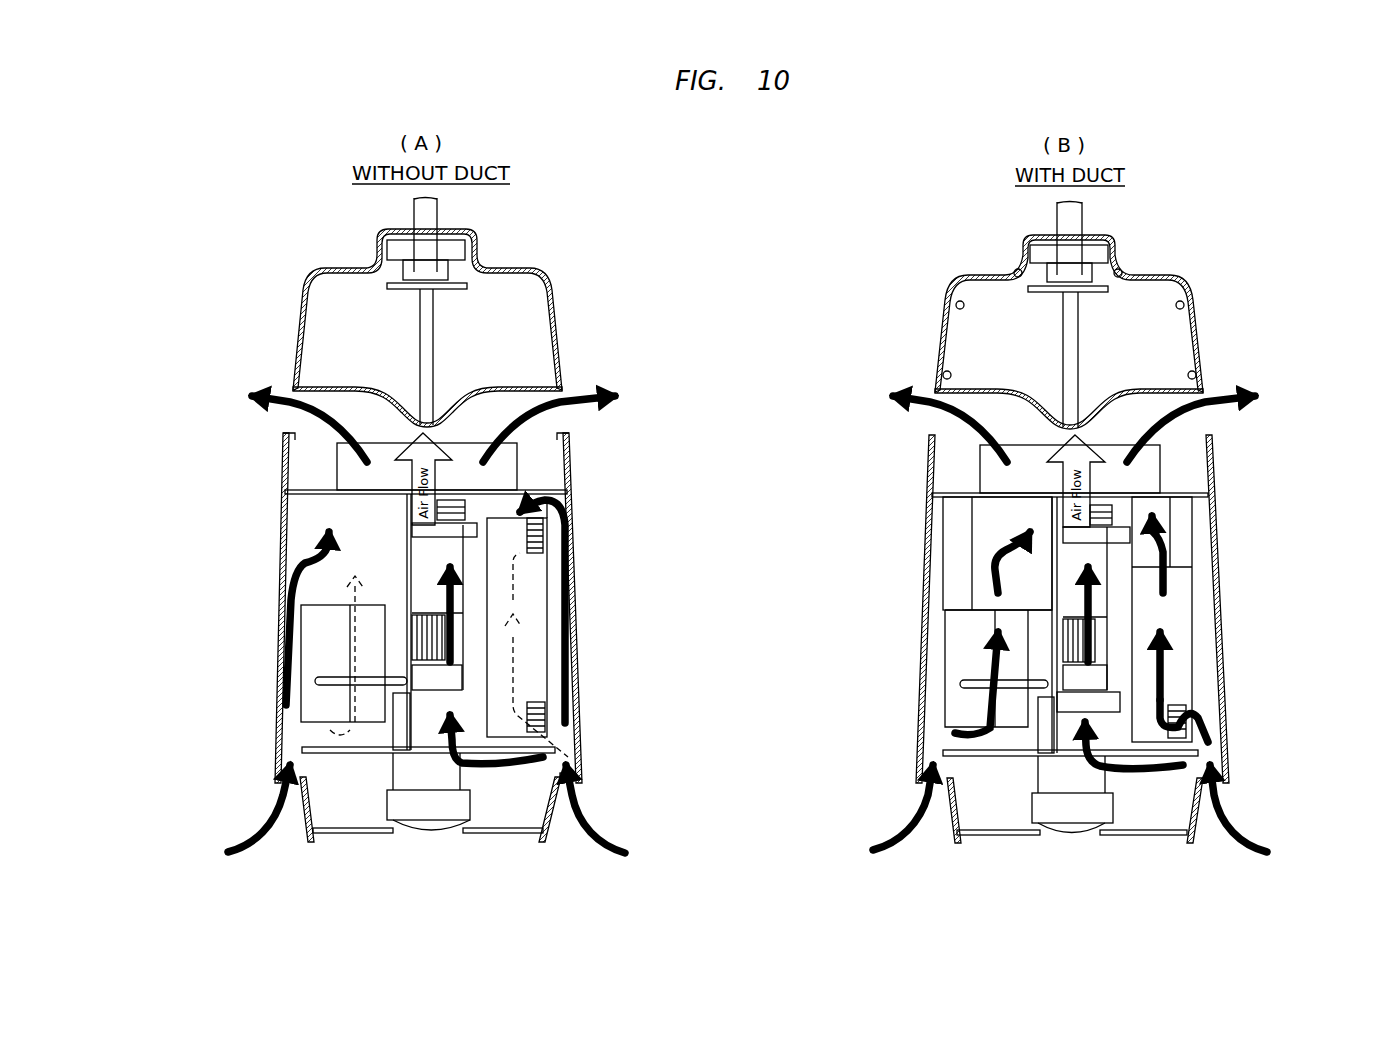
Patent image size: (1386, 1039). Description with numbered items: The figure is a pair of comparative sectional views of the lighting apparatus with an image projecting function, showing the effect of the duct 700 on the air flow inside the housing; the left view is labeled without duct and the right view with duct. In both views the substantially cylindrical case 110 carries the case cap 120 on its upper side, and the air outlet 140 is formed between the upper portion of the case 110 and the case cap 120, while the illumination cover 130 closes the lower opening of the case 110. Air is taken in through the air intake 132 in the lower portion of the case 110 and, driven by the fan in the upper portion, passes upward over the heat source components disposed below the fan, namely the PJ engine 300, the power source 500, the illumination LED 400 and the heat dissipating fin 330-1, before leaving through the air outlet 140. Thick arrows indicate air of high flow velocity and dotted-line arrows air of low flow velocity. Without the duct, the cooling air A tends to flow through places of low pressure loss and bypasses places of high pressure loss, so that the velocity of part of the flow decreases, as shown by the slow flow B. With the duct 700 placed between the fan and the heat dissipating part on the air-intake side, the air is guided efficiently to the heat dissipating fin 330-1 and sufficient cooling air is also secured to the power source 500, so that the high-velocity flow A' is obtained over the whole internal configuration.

The case cap 120 is at (547, 310).
The air outlet 140 is at (550, 402).
The case 110 is at (575, 567).
The cooling air A is at (447, 667).
The air flow with low flow velocity B is at (350, 640).
The heat dissipating fin 330-1 is at (303, 637).
The power source 500 is at (553, 665).
The air intake 132 is at (287, 777).
The illumination LED 400 is at (340, 753).
The PJ engine 300 is at (432, 738).
The duct 700 is at (953, 528).
The air flow with high flow velocity A' is at (1045, 684).
The illumination cover 130 is at (1142, 838).